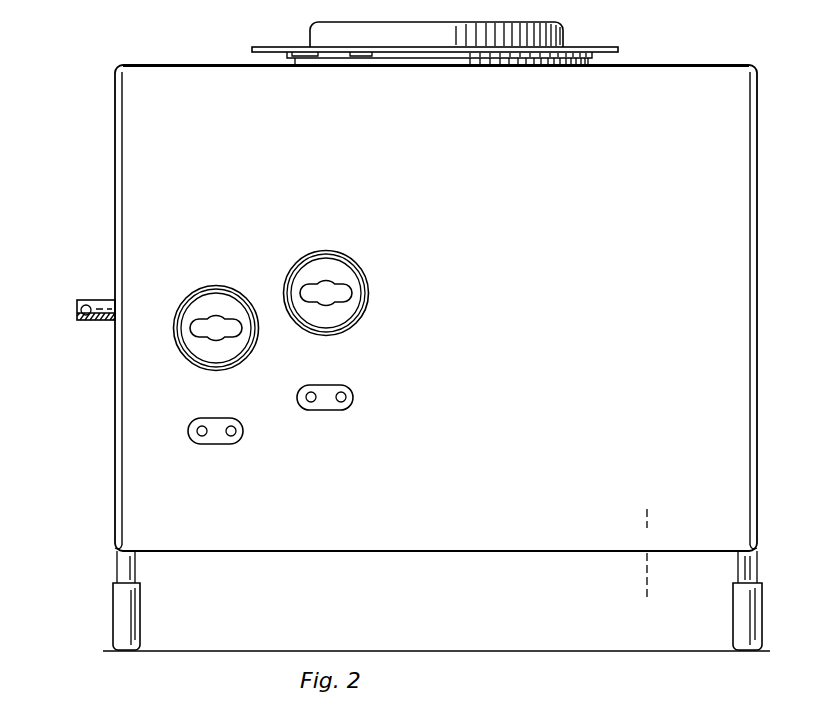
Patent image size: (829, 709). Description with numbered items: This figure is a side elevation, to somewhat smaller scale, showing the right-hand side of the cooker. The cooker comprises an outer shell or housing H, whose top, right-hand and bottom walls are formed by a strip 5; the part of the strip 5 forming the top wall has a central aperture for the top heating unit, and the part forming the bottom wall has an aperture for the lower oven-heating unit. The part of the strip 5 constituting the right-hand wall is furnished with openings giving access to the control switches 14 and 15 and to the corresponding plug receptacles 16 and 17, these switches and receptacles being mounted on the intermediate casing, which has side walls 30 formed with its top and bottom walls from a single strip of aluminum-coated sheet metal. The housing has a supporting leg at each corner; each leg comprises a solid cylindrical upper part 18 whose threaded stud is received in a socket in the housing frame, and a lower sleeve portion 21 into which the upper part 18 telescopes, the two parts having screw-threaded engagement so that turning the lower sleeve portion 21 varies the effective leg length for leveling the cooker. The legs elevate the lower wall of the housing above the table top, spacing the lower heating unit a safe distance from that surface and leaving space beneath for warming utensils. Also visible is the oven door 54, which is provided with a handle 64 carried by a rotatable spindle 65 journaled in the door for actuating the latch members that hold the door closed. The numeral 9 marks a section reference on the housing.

The outer shell or housing H is at (661, 54).
The side walls 30 is at (704, 76).
The oven door 54 is at (118, 424).
The strip 5 is at (218, 552).
The control switch 14 is at (219, 303).
The control switch 15 is at (338, 271).
The plug receptacle 16 is at (220, 445).
The plug receptacle 17 is at (320, 411).
The handle 64 is at (80, 303).
The rotatable spindle 65 is at (100, 300).
The upper part of leg 18 is at (123, 573).
The lower sleeve portion of leg 21 is at (120, 633).
The section line 9 is at (646, 558).